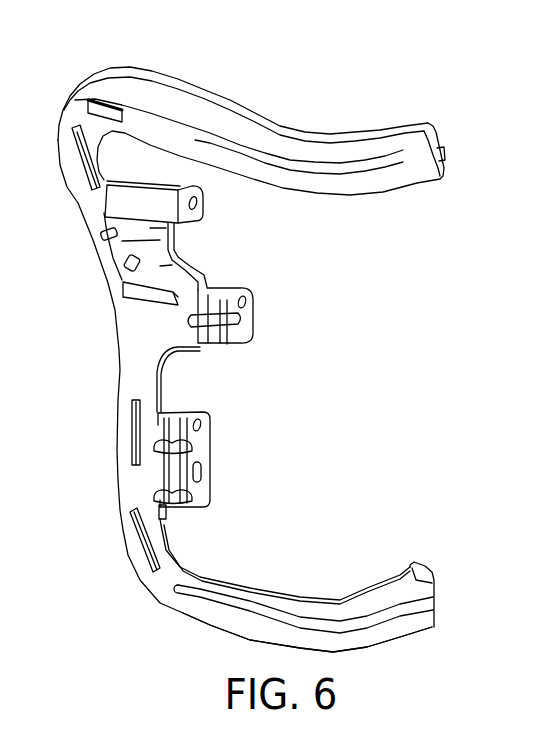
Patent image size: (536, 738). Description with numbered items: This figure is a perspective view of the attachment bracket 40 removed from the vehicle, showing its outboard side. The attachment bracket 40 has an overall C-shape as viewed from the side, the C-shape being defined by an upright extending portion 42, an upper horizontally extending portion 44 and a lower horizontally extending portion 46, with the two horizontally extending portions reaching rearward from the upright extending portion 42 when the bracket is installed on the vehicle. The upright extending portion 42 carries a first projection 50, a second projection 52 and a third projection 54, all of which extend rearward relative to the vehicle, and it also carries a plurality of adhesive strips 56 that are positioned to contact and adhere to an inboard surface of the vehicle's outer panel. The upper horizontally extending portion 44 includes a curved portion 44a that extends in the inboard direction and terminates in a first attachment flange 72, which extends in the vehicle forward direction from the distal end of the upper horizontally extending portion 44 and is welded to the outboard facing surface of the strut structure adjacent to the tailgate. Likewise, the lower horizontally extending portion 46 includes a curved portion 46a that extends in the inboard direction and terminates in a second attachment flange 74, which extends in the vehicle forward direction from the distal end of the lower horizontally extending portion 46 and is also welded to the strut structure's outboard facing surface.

The attachment bracket 40 is at (103, 51).
The upright extending portion 42 is at (138, 343).
The upper horizontally extending portion 44 is at (257, 137).
The curved portion 44a is at (313, 138).
The lower horizontally extending portion 46 is at (300, 610).
The curved portion 46a is at (378, 628).
The first projection 50 is at (148, 205).
The second projection 52 is at (182, 423).
The third projection 54 is at (218, 335).
The adhesive strips 56 is at (88, 172).
The first attachment flange 72 is at (447, 162).
The second attachment flange 74 is at (408, 572).